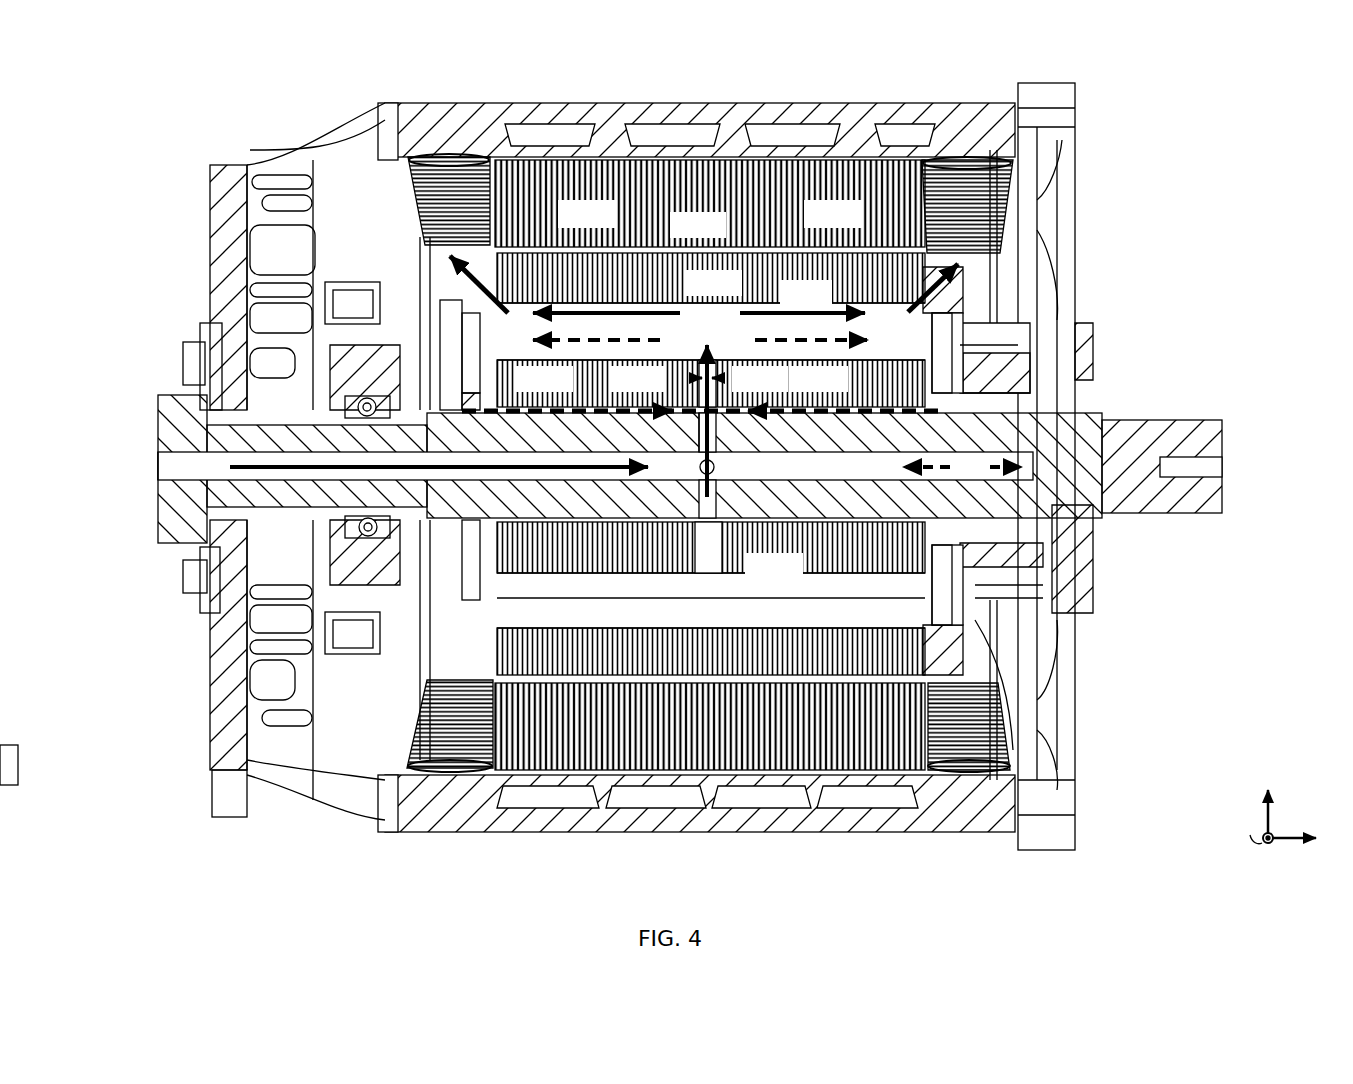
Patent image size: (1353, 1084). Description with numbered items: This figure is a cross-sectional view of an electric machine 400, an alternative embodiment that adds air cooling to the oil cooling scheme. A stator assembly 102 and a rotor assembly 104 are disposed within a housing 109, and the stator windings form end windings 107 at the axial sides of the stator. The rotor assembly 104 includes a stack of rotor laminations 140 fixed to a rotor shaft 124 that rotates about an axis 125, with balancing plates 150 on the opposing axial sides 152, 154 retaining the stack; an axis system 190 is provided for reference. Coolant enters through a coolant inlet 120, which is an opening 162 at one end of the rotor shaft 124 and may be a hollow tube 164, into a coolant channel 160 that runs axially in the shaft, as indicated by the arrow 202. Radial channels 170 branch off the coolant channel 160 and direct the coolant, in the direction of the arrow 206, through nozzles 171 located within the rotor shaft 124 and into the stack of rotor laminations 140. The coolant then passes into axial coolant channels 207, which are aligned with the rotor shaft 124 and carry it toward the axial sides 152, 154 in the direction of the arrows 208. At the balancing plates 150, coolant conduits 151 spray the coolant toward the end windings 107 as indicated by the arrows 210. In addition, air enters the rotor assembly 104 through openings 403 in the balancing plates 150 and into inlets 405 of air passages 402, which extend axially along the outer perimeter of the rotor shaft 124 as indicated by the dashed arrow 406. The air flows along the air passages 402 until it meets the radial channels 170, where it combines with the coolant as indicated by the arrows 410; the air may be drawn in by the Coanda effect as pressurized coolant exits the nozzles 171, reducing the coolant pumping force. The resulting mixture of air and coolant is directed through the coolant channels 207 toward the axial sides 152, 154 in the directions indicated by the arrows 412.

The electric machine 400 is at (1125, 115).
The stator assembly 102 is at (1010, 180).
The rotor assembly 104 is at (940, 662).
The end windings 107 is at (1013, 213).
The housing 109 is at (292, 150).
The coolant inlet 120 is at (158, 450).
The rotor shaft 124 is at (1080, 460).
The axis 125 is at (990, 457).
The rotor laminations 140 is at (862, 272).
The balancing plates 150 is at (463, 337).
The coolant conduits 151 is at (443, 267).
The first axial side 152 is at (100, 285).
The second axial side 154 is at (1180, 305).
The coolant channel 160 is at (797, 480).
The opening 162 is at (167, 477).
The hollow tube 164 is at (207, 490).
The radial channels 170 is at (722, 412).
The nozzles 171 is at (703, 427).
The axis system 190 is at (1318, 792).
The arrow 202 is at (297, 470).
The arrow 206 is at (714, 467).
The axial coolant channels 207 is at (905, 343).
The arrows 208 is at (780, 337).
The arrows 210 is at (468, 267).
The air passages 402 is at (557, 413).
The openings 403 is at (932, 592).
The inlets 405 is at (473, 405).
The dashed arrow 406 is at (660, 410).
The arrows 410 is at (700, 386).
The arrows 412 is at (637, 337).